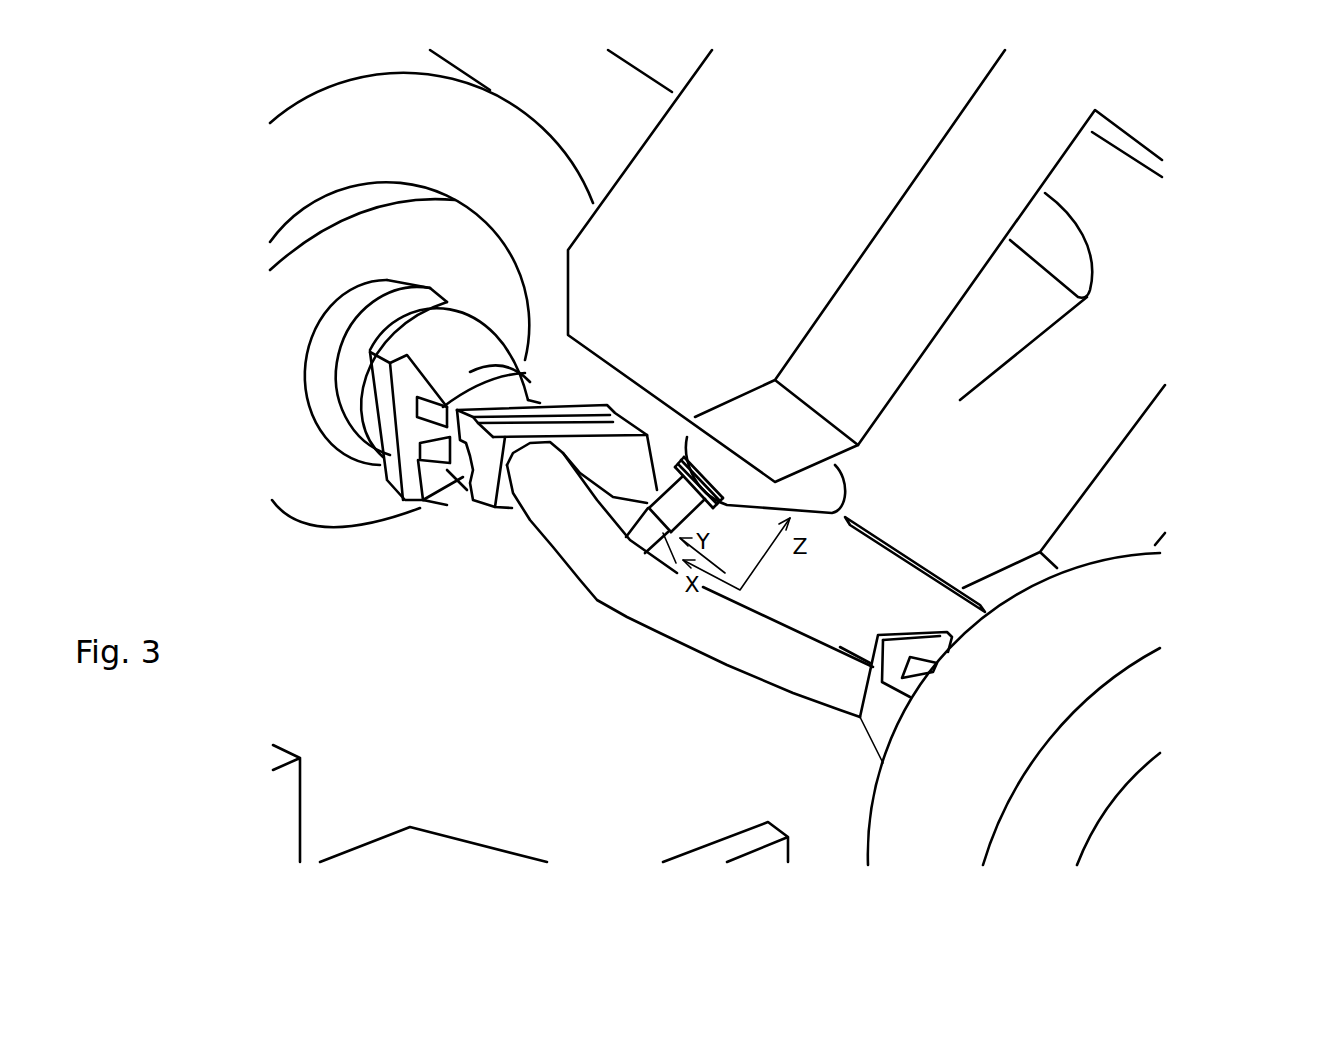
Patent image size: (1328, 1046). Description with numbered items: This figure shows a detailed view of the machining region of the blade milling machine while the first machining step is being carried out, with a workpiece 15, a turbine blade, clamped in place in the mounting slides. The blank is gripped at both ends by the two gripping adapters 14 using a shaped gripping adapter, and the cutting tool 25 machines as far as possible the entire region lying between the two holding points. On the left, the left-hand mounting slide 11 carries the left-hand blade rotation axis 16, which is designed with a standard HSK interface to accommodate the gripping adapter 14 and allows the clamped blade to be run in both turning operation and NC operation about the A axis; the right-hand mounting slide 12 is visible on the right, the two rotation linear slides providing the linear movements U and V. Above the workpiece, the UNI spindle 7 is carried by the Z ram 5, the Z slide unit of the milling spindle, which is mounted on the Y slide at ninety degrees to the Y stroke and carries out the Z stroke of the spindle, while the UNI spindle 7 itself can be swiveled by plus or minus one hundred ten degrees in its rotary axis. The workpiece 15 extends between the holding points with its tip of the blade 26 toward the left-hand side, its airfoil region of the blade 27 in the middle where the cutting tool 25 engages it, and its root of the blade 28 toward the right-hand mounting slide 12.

The Z ram 5 is at (776, 208).
The UNI spindle 7 is at (1057, 253).
The left-hand mounting slide 11 is at (383, 145).
The right-hand mounting slide 12 is at (1025, 688).
The gripping adapter 14 is at (460, 352).
The workpiece 15 is at (613, 560).
The left-hand blade rotation axis 16 is at (340, 387).
The cutting tool 25 is at (678, 508).
The tip of the blade 26 is at (483, 480).
The airfoil region of the blade 27 is at (713, 628).
The root of the blade 28 is at (888, 712).